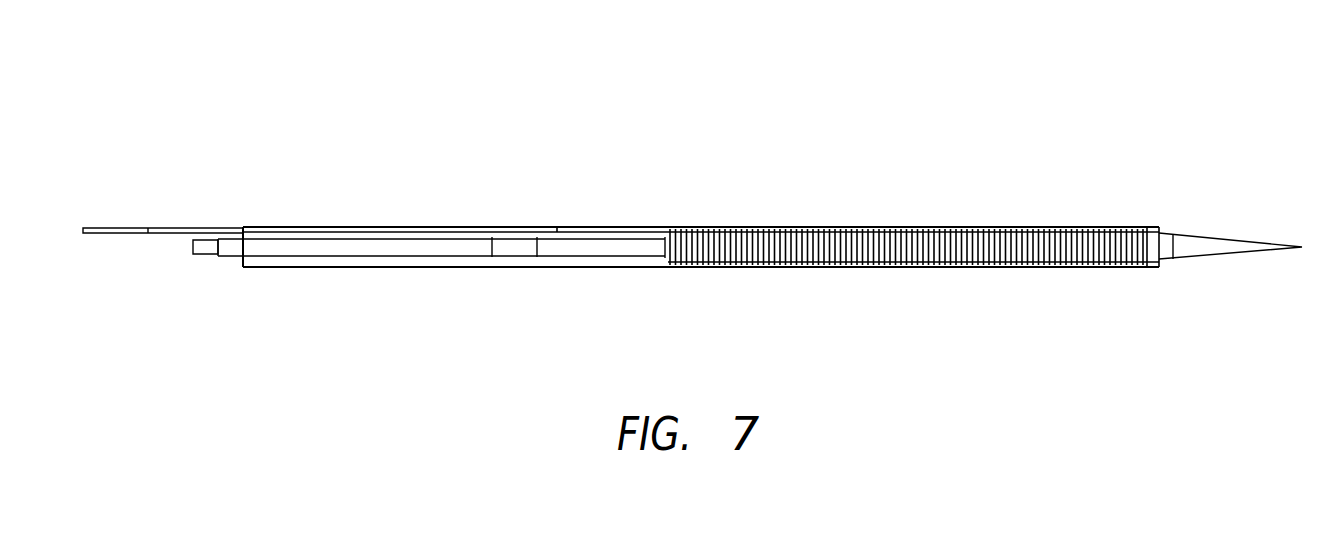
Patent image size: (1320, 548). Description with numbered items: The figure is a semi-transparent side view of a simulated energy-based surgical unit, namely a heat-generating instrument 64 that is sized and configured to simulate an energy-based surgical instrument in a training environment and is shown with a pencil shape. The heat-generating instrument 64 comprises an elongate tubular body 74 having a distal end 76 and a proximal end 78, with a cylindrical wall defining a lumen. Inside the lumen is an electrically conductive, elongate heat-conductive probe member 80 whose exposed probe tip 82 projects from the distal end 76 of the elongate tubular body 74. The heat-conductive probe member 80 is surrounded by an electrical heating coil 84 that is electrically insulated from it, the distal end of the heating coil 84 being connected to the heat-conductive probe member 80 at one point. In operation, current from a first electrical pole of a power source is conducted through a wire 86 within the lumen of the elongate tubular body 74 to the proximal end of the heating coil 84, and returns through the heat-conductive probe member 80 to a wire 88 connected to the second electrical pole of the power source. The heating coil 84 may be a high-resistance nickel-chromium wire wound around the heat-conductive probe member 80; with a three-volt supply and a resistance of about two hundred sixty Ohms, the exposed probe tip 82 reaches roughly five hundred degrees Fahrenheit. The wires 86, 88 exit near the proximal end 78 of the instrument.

The heat-generating instrument 64 is at (517, 196).
The elongate tubular body 74 is at (391, 227).
The distal end 76 is at (1160, 227).
The proximal end 78 is at (243, 267).
The heat-conductive probe member 80 is at (1172, 253).
The exposed probe tip 82 is at (1237, 240).
The heating coil 84 is at (873, 250).
The wire 86 is at (121, 227).
The wire 88 is at (198, 256).